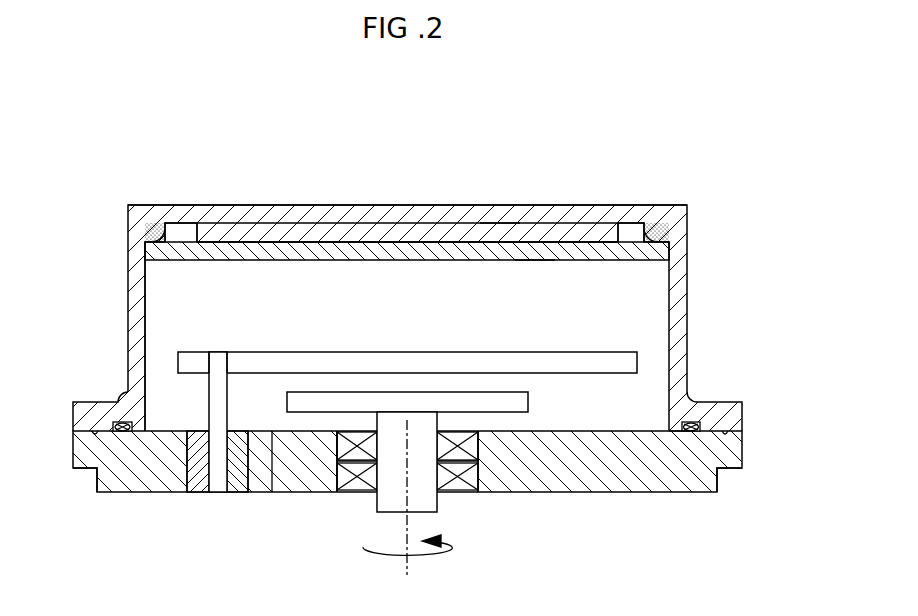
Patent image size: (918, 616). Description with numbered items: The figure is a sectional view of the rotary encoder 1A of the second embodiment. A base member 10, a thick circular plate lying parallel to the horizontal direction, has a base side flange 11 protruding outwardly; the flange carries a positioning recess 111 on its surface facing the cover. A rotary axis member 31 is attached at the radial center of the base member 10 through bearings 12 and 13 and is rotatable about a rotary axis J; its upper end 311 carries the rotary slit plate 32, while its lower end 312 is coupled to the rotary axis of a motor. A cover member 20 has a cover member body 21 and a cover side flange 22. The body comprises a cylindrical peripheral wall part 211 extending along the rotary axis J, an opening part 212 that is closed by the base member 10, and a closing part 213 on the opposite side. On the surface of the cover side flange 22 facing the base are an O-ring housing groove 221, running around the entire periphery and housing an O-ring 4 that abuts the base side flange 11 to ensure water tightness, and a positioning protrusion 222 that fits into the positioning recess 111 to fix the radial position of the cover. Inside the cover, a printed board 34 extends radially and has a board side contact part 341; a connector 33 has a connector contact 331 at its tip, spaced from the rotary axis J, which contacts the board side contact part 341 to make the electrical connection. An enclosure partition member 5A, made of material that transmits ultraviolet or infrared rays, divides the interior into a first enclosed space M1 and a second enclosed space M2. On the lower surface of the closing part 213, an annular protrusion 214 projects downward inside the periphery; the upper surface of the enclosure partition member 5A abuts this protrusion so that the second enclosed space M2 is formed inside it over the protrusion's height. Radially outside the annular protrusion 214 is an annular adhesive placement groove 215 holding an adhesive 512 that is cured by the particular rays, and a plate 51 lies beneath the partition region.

The rotary encoder 1A is at (706, 153).
The base member 10 is at (411, 492).
The base side flange 11 is at (82, 452).
The positioning recess 111 is at (96, 437).
The bearing 12 is at (337, 443).
The bearing 13 is at (336, 462).
The cover member 20 is at (411, 343).
The cover member body 21 is at (128, 333).
The cylindrical peripheral wall part 211 is at (142, 340).
The opening part 212 is at (668, 434).
The closing part 213 is at (431, 213).
The annular protrusion 214 is at (183, 233).
The adhesive placement groove 215 is at (160, 240).
The cover side flange 22 is at (102, 402).
The O-ring housing groove 221 is at (118, 437).
The positioning protrusion 222 is at (97, 467).
The O-ring 4 is at (131, 438).
The enclosure partition member 5A is at (273, 242).
The inner plate 51 is at (602, 261).
The adhesive 512 is at (153, 236).
The rotary axis member 31 is at (409, 499).
The upper end 311 is at (422, 412).
The lower end 312 is at (390, 515).
The rotary slit plate 32 is at (530, 413).
The connector 33 is at (208, 470).
The connector contact 331 is at (271, 432).
The printed board 34 is at (598, 375).
The board side contact part 341 is at (224, 360).
The first enclosed space M1 is at (535, 293).
The second enclosed space M2 is at (497, 227).
The rotary axis J is at (412, 562).